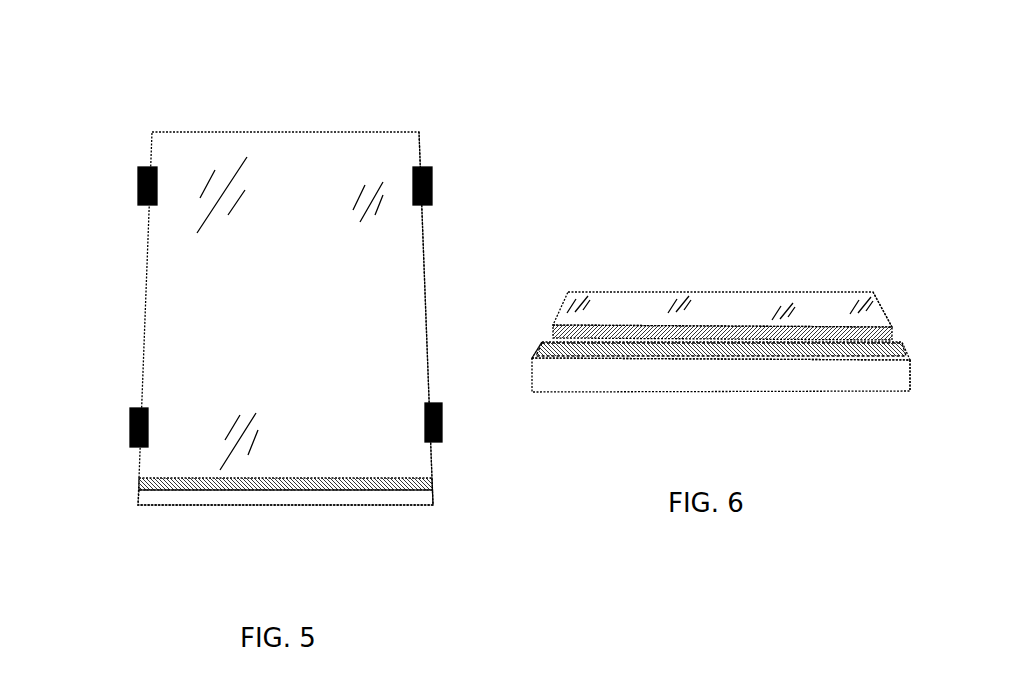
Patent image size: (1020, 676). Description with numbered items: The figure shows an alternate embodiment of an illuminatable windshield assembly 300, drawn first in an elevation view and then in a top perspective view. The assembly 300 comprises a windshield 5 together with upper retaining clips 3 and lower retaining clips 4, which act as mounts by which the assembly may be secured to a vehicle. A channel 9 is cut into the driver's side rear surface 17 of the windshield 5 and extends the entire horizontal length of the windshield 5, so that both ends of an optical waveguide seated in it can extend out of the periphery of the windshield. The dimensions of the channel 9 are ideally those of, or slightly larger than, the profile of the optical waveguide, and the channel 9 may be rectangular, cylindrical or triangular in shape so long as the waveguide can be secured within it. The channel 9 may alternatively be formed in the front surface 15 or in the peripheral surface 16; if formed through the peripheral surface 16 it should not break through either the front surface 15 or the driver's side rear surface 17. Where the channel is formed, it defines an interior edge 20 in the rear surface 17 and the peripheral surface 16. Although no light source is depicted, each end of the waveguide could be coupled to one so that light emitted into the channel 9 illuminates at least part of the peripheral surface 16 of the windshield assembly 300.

In FIG. 5, the illuminatable windshield assembly 300 is at (382, 79).
In FIG. 6, the illuminatable windshield assembly 300 is at (741, 256).
In FIG. 5, the upper retaining clips 3 is at (412, 155).
In FIG. 5, the lower retaining clips 4 is at (416, 391).
In FIG. 5, the windshield 5 is at (442, 248).
In FIG. 6, the windshield 5 is at (841, 272).
In FIG. 5, the driver's side rear surface 17 is at (183, 256).
In FIG. 6, the driver's side rear surface 17 is at (606, 300).
In FIG. 5, the channel 9 is at (443, 481).
In FIG. 6, the channel 9 is at (532, 340).
In FIG. 6, the interior edge 20 is at (552, 343).
In FIG. 6, the front surface 15 is at (620, 396).
In FIG. 6, the peripheral surface 16 is at (893, 376).